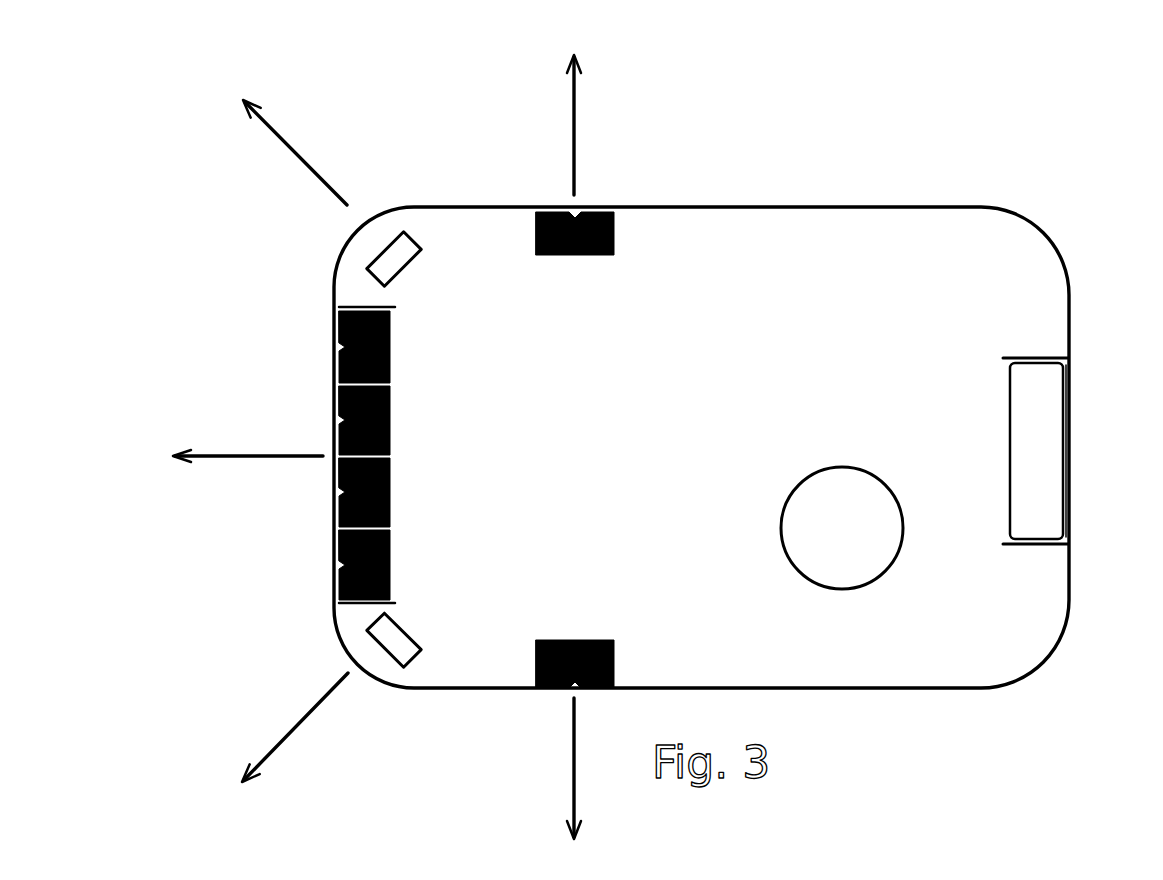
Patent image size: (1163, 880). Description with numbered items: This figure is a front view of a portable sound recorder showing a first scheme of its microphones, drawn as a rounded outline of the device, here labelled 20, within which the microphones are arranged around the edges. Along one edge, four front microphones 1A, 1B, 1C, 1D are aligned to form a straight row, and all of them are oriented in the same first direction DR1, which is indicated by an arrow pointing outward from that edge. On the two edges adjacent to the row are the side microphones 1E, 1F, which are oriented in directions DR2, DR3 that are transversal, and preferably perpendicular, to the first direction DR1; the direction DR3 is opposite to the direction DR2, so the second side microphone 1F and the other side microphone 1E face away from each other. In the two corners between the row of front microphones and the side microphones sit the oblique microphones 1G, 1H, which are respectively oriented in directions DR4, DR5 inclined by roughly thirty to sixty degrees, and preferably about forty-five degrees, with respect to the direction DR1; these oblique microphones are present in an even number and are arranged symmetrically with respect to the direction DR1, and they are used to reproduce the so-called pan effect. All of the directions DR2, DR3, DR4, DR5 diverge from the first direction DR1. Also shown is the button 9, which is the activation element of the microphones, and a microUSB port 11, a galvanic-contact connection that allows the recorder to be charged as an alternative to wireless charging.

The robot cleaner body 20 is at (713, 445).
The front microphone 1A is at (390, 340).
The front microphone 1B is at (390, 415).
The front microphone 1C is at (390, 495).
The front microphone 1D is at (390, 570).
The side microphone 1E is at (563, 640).
The second side microphone 1F is at (565, 255).
The oblique microphone 1G is at (383, 637).
The oblique microphone 1H is at (285, 150).
The button 9 is at (842, 528).
The microUSB port 11 is at (1037, 448).
The first direction DR1 is at (235, 456).
The second direction DR2 is at (574, 117).
The third direction DR3 is at (574, 775).
The fourth direction DR4 is at (303, 715).
The fifth direction DR5 is at (405, 245).